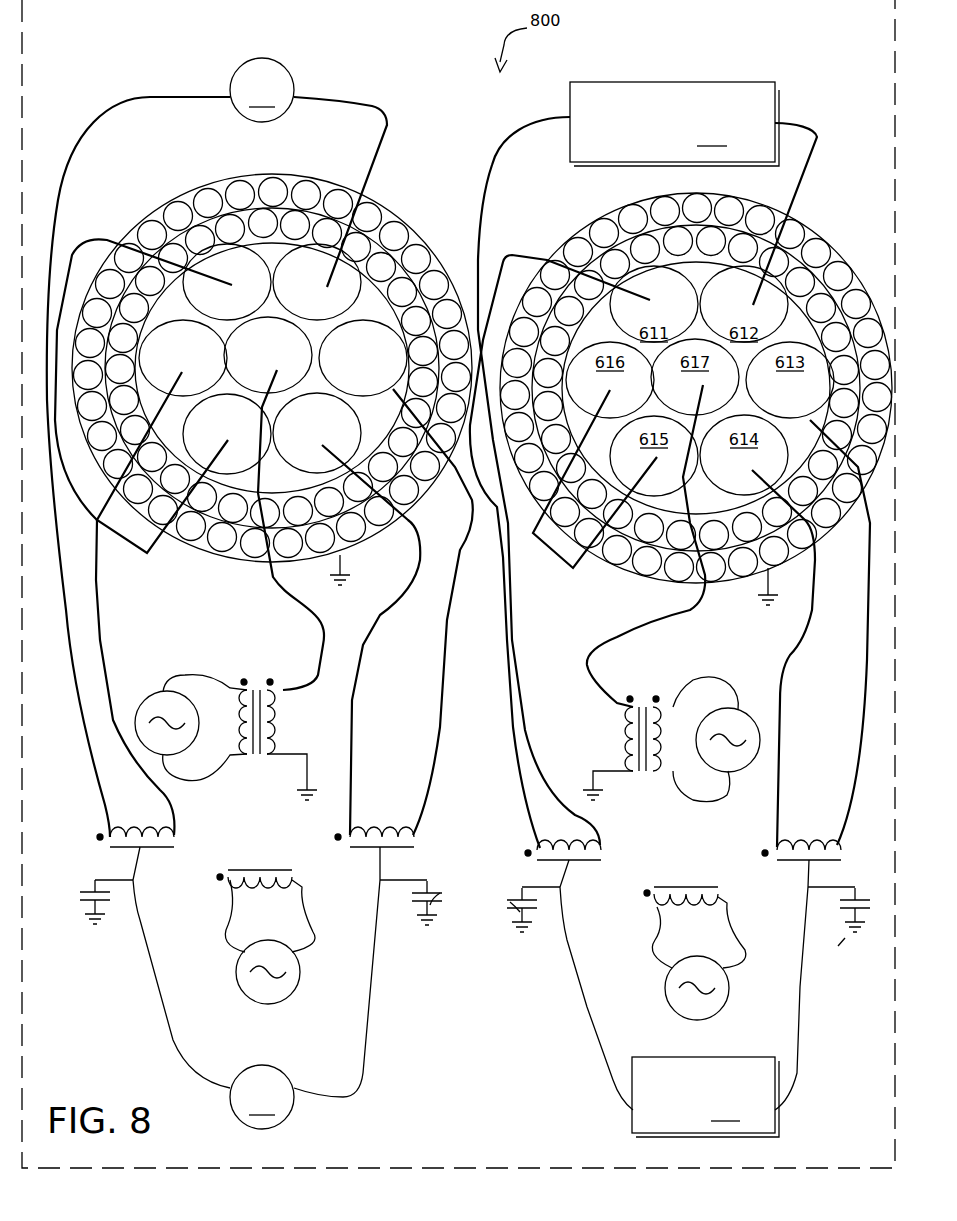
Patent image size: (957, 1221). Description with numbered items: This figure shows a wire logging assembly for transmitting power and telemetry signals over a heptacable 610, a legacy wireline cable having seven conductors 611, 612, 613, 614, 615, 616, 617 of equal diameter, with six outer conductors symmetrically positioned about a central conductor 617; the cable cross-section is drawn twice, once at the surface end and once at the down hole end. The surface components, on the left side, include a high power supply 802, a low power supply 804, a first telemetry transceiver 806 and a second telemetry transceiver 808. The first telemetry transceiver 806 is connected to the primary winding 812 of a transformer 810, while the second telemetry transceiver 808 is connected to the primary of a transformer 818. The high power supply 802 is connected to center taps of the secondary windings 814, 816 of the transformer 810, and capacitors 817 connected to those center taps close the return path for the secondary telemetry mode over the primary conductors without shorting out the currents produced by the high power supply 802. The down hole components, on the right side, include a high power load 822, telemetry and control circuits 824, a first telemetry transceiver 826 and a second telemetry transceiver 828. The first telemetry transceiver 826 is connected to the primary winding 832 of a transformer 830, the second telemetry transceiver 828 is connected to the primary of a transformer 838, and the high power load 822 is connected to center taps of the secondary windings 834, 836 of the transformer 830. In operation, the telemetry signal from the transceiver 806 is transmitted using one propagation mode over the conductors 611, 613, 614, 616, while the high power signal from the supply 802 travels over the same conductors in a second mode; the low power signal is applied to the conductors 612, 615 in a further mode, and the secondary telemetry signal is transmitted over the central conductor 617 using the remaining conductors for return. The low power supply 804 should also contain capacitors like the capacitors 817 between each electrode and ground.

The heptacable 610 is at (402, 217).
The conductor 611 is at (213, 320).
The conductor 612 is at (303, 320).
The conductor 613 is at (349, 349).
The conductor 614 is at (303, 426).
The conductor 615 is at (213, 426).
The conductor 616 is at (169, 349).
The central conductor 617 is at (254, 349).
The high power supply 802 is at (262, 1097).
The low power supply 804 is at (262, 90).
The first telemetry transceiver 806 is at (240, 975).
The second telemetry transceiver 808 is at (147, 695).
The transformer 810 is at (189, 868).
The primary winding 812 is at (302, 887).
The secondary winding 814 is at (173, 840).
The secondary winding 816 is at (413, 838).
The capacitor 817 is at (88, 906).
The transformer 818 is at (253, 661).
The high power load 822 is at (705, 1097).
The telemetry and control circuits 824 is at (674, 124).
The first telemetry transceiver 826 is at (663, 992).
The second telemetry transceiver 828 is at (743, 708).
The transformer 830 is at (612, 885).
The primary winding 832 is at (727, 903).
The secondary winding 834 is at (603, 849).
The secondary winding 836 is at (840, 847).
The transformer 838 is at (655, 672).